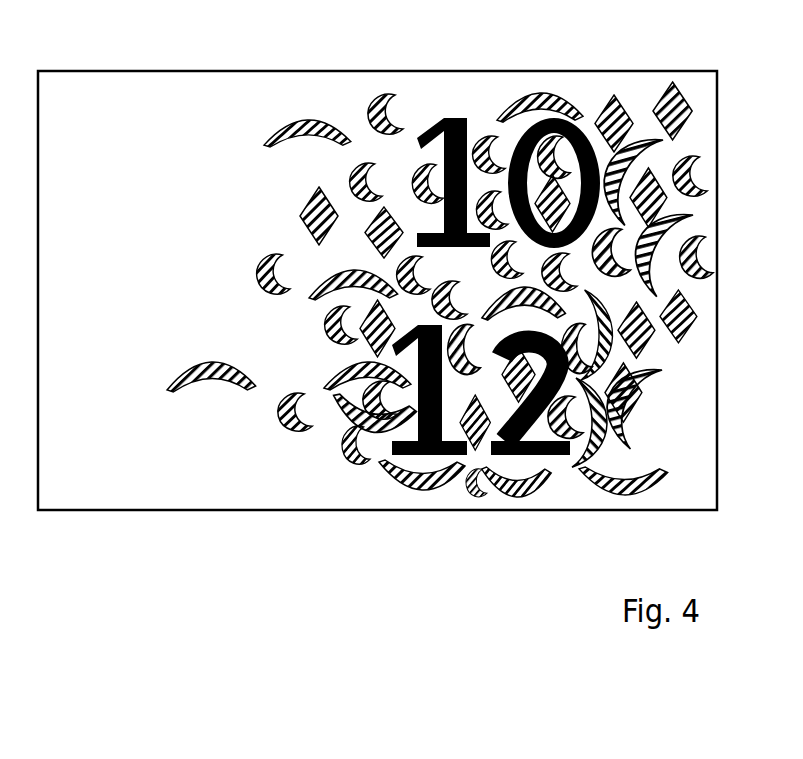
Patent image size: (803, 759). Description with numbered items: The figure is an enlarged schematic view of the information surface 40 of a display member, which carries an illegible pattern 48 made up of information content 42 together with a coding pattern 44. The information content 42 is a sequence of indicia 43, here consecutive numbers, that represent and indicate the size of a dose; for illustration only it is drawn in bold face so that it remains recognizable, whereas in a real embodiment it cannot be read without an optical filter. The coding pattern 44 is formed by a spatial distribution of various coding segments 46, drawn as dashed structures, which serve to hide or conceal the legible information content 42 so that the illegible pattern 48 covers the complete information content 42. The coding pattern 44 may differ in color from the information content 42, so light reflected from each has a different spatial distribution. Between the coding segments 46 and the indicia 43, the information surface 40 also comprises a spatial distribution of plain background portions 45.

The information surface 40 is at (273, 480).
The information content 42 is at (438, 470).
The indicia 43 is at (455, 117).
The coding pattern 44 is at (508, 503).
The plain background portions 45 is at (513, 132).
The coding segments 46 is at (617, 103).
The illegible pattern 48 is at (576, 498).